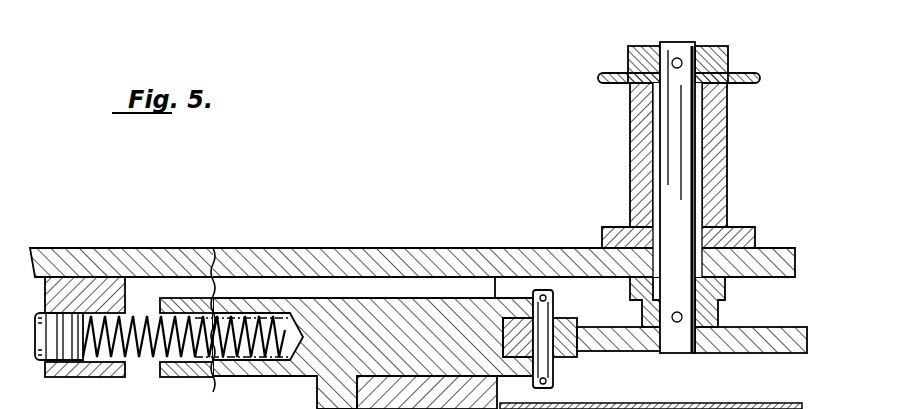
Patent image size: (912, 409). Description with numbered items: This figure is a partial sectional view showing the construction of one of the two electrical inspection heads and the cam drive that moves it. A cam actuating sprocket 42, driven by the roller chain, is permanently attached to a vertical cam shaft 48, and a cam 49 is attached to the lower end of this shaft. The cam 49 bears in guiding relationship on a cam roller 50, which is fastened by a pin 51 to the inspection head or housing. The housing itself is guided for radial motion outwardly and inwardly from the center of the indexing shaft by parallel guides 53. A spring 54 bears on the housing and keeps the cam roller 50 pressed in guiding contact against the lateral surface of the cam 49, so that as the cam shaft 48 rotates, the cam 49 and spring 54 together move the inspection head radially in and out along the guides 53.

The cam actuating sprocket 42 is at (728, 73).
The vertical cam shaft 48 is at (692, 45).
The cam 49 is at (757, 327).
The cam roller 50 is at (578, 323).
The pin 51 is at (553, 387).
The parallel guides 53 is at (378, 288).
The spring 54 is at (146, 358).